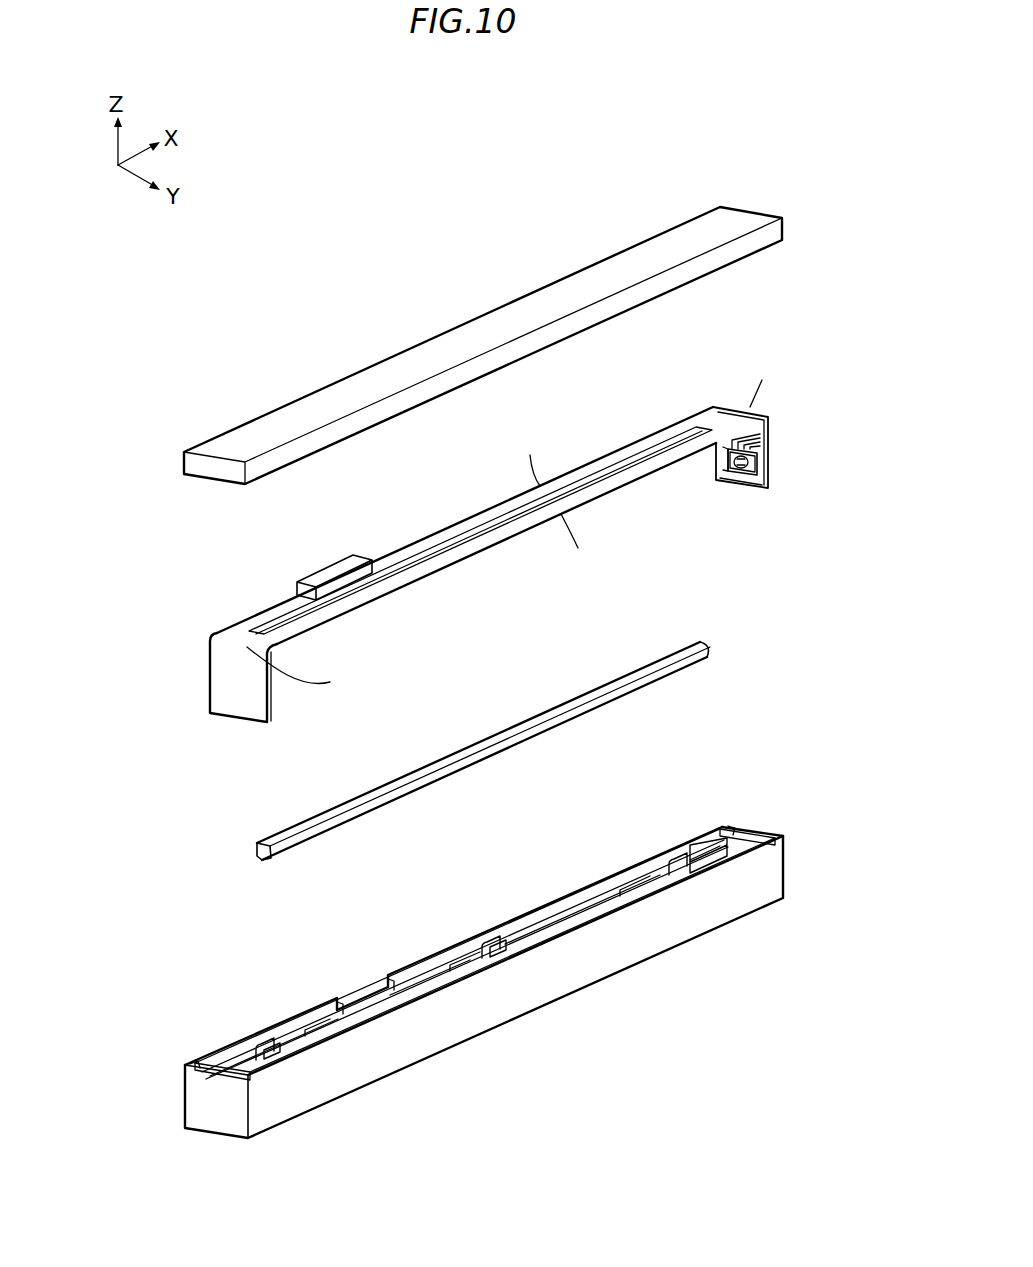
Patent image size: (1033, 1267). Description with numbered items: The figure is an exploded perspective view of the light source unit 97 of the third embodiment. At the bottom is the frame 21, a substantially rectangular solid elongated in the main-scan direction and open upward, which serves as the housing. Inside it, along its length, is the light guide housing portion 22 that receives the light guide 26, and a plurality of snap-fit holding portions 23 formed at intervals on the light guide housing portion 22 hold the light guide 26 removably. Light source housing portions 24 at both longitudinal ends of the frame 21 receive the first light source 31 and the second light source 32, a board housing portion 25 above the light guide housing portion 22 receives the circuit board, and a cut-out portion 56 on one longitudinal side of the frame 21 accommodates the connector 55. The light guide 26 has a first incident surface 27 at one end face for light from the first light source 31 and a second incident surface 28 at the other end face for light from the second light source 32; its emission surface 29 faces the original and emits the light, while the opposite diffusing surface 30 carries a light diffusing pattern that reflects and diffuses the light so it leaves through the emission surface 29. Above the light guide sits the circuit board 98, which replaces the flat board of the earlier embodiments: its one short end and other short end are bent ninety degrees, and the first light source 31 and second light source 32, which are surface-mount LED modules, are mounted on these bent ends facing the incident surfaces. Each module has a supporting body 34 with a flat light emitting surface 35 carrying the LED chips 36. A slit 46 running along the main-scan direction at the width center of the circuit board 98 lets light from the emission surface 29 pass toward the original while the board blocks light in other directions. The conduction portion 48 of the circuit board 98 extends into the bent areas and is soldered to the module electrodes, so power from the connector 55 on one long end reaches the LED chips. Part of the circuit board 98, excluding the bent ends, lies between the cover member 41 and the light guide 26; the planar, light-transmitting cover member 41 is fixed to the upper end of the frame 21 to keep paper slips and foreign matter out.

The frame 21 is at (462, 954).
The light guide housing portion 22 is at (462, 966).
The snap-fit holding portions 23 is at (258, 1046).
The light source housing portions 24 is at (196, 1055).
The board housing portion 25 is at (587, 896).
The light guide 26 is at (483, 725).
The first incident surface 27 is at (700, 640).
The second incident surface 28 is at (262, 841).
The emission surface 29 is at (475, 743).
The diffusing surface 30 is at (468, 767).
The first light source 31 is at (769, 461).
The second light source 32 is at (193, 639).
The supporting body 34 is at (759, 459).
The light emitting surface 35 is at (746, 484).
The LED chips 36 is at (727, 471).
The cover member 41 is at (229, 433).
The slit 46 is at (487, 521).
The conduction portion 48 is at (778, 445).
The connector 55 is at (318, 568).
The cut-out portion 56 is at (352, 998).
The light source unit 97 is at (483, 345).
The circuit board 98 is at (506, 538).